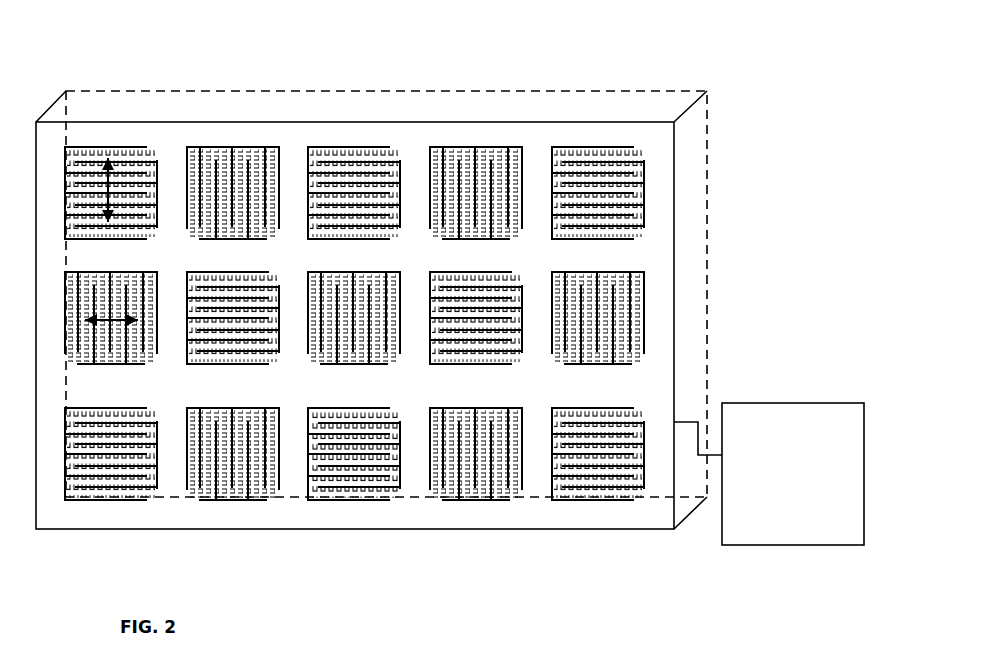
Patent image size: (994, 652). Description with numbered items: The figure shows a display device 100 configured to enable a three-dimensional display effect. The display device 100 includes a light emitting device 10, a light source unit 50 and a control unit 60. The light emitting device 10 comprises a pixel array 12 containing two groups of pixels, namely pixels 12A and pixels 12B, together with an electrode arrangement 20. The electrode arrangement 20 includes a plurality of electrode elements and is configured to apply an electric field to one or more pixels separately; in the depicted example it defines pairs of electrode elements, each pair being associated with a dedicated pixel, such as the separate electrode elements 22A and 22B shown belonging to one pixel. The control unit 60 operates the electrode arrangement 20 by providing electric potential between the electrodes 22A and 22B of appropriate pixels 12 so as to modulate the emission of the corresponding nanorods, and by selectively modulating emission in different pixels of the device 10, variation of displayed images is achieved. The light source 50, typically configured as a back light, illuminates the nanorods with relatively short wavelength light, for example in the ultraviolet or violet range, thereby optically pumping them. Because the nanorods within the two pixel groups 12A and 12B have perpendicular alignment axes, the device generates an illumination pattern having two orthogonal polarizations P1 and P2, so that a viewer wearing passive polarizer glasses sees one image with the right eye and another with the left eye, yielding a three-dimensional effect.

The display device 100 is at (712, 61).
The light emitting device 10 is at (674, 228).
The pixel array 12 is at (622, 147).
The pixels of first group 12A is at (497, 226).
The pixels of second group 12B is at (622, 413).
The electrode arrangement 20 is at (189, 146).
The electrode element 22A is at (401, 460).
The electrode element 22B is at (308, 460).
The light source unit 50 is at (468, 103).
The control unit 60 is at (813, 407).
The polarization P1 is at (113, 203).
The polarization P2 is at (122, 323).